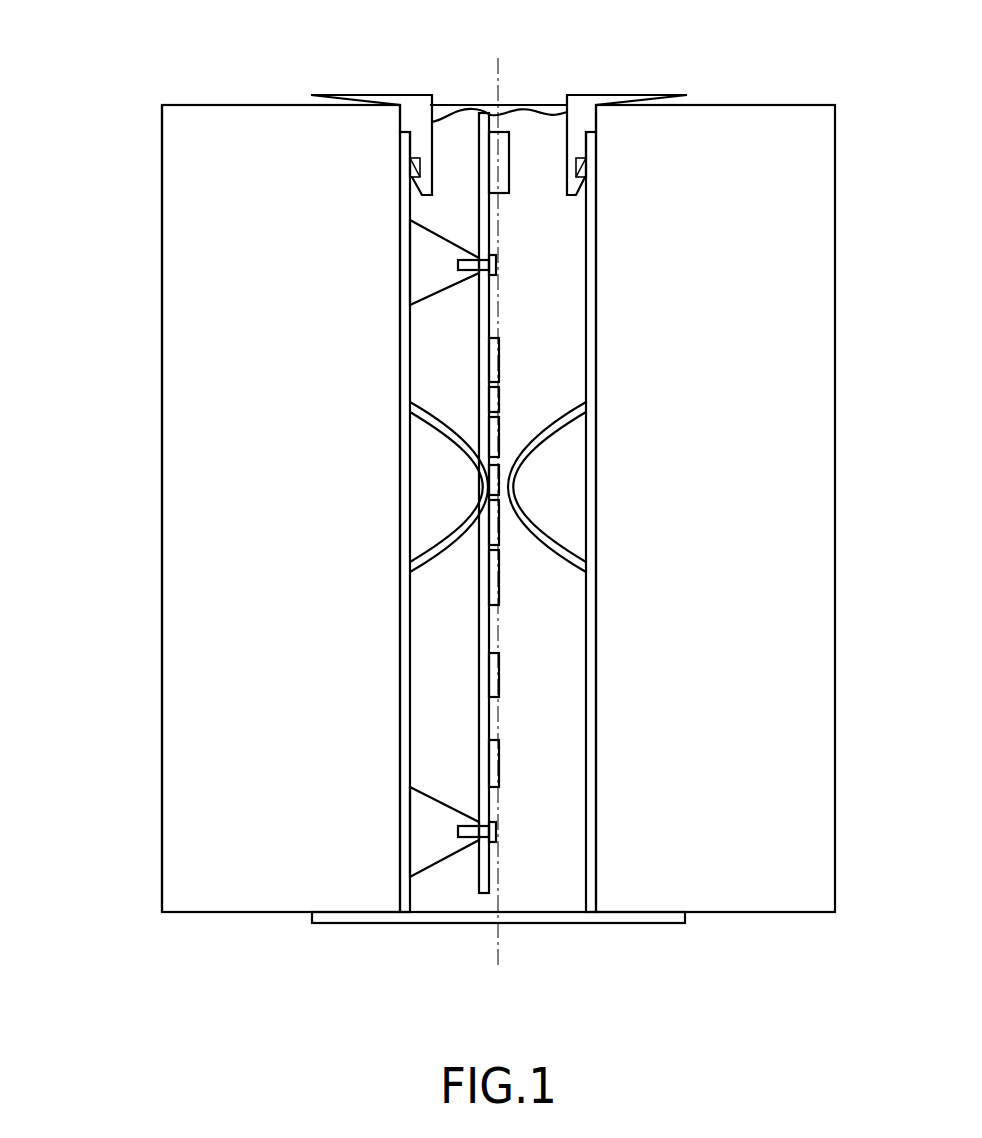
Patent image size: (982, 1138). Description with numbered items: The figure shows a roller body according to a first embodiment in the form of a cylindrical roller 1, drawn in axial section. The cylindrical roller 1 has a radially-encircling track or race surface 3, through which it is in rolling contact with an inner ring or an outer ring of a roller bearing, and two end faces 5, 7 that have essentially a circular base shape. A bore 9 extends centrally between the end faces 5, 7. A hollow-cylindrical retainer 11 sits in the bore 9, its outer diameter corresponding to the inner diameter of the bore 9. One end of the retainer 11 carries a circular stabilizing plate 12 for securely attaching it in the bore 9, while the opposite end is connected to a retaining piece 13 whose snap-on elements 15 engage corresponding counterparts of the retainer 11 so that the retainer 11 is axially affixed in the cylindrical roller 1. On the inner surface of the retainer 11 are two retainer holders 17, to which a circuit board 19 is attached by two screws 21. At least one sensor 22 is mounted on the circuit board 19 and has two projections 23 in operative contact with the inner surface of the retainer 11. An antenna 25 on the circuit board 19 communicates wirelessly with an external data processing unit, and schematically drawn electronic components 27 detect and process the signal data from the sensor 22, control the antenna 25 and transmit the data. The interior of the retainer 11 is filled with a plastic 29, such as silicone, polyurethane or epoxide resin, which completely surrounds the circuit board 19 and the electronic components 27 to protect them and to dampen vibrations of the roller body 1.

The cylindrical roller 1 is at (101, 125).
The race surface 3 is at (160, 410).
The end face 5 is at (248, 118).
The end face 7 is at (740, 902).
The bore 9 is at (422, 47).
The retainer 11 is at (588, 868).
The stabilizing plate 12 is at (357, 917).
The retaining piece 13 is at (587, 103).
The snap-on elements 15 is at (422, 183).
The retainer holders 17 is at (432, 283).
The circuit board 19 is at (488, 113).
The screws 21 is at (497, 262).
The sensor 22 is at (498, 470).
The projections 23 is at (440, 427).
The antenna 25 is at (505, 178).
The electronic components 27 is at (498, 418).
The plastic 29 is at (537, 122).